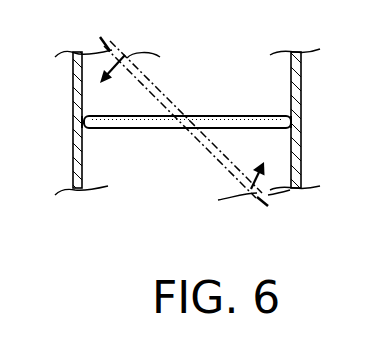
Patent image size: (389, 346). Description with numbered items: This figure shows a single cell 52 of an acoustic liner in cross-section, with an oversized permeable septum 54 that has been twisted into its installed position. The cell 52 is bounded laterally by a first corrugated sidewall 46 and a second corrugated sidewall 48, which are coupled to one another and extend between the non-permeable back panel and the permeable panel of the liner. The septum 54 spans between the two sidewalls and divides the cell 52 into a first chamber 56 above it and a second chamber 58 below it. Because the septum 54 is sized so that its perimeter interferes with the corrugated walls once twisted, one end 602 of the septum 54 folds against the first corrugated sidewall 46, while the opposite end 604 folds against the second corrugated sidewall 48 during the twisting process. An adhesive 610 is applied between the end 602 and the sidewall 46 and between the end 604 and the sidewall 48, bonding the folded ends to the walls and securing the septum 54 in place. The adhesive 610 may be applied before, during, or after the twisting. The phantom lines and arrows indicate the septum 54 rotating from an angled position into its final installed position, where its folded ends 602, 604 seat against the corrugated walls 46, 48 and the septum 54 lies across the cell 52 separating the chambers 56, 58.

The first corrugated sidewall 46 is at (73, 89).
The second corrugated sidewall 48 is at (302, 92).
The cell 52 is at (191, 85).
The permeable septum 54 is at (127, 128).
The first chamber 56 is at (248, 100).
The second chamber 58 is at (176, 173).
The end of the septum 602 is at (110, 39).
The opposite end of the septum 604 is at (294, 131).
The adhesive 610 is at (80, 119).